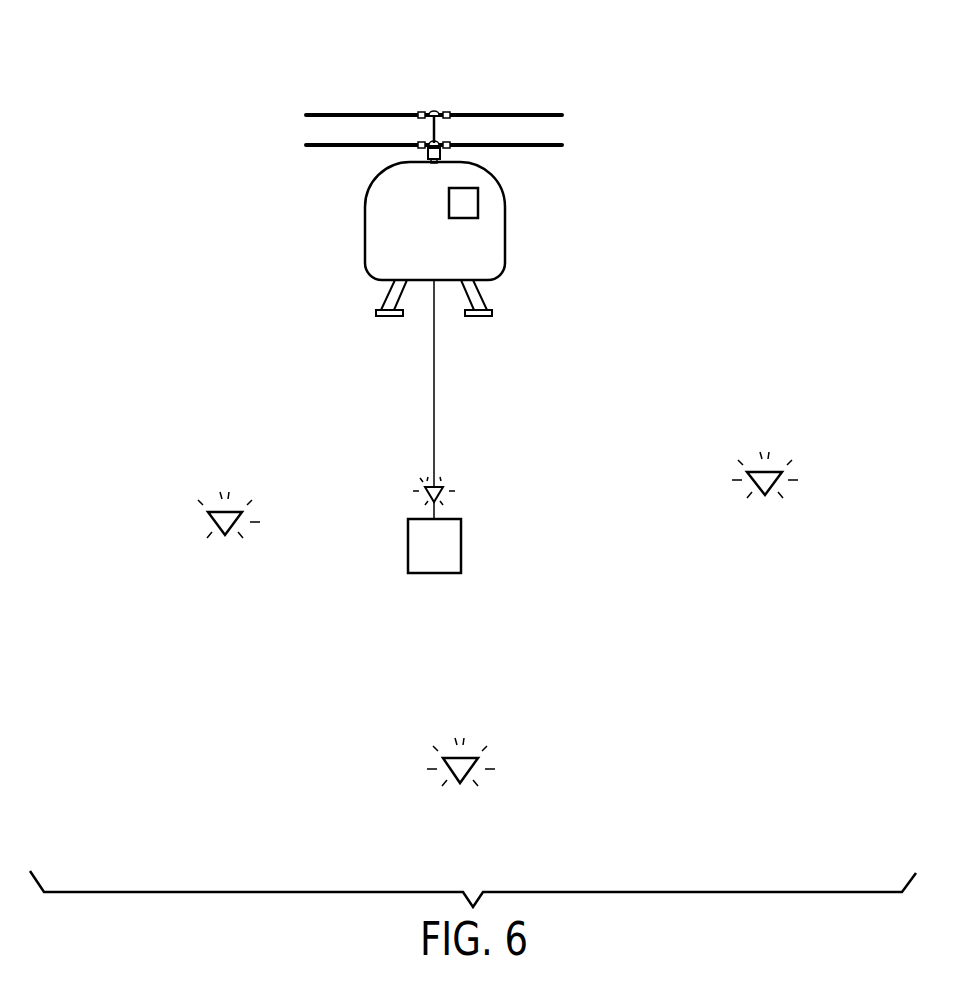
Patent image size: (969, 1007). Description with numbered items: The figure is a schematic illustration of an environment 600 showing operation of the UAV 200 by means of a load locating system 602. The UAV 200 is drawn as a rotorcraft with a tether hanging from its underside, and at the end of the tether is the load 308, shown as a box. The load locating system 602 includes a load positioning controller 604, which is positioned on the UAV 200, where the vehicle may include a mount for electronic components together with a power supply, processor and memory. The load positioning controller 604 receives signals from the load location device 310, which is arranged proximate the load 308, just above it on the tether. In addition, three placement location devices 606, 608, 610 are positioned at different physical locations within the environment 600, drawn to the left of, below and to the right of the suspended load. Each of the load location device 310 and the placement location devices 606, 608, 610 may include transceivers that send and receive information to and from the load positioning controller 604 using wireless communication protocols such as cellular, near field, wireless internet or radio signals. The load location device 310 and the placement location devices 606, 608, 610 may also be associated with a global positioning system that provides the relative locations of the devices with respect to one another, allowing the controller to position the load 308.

The environment 600 is at (713, 47).
The UAV 200 is at (583, 103).
The load locating system 602 is at (652, 207).
The load positioning controller 604 is at (480, 201).
The load 308 is at (461, 547).
The load location device 310 is at (437, 488).
The placement location device 606 is at (201, 522).
The placement location device 608 is at (469, 766).
The placement location device 610 is at (751, 484).